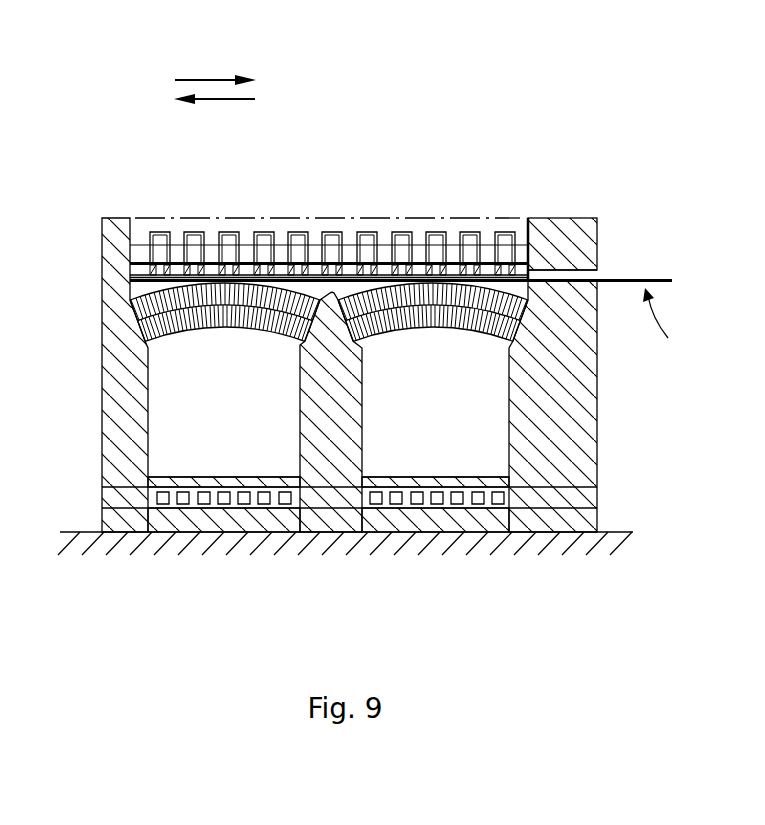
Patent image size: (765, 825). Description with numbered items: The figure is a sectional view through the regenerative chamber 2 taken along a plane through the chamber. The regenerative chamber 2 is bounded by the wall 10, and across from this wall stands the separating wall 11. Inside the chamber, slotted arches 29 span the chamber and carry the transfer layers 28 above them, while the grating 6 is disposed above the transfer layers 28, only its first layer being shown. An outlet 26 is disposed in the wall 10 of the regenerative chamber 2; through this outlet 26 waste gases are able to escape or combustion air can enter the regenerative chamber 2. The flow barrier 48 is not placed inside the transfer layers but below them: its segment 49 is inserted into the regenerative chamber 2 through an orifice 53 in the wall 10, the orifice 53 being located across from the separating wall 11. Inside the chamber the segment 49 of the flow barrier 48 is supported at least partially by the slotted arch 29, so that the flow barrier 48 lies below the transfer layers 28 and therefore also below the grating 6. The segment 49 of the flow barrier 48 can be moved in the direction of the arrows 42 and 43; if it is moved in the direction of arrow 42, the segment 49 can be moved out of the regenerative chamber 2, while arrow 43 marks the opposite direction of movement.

The regenerative chamber 2 is at (588, 195).
The grating 6 is at (400, 227).
The wall 10 is at (103, 283).
The separating wall 11 is at (113, 369).
The outlet 26 is at (175, 422).
The transfer layers 28 is at (314, 265).
The slotted arch 29 is at (220, 315).
The arrow 42 is at (206, 79).
The arrow 43 is at (225, 101).
The flow barrier 48 is at (663, 329).
The segment 49 is at (664, 277).
The orifice 53 is at (597, 277).